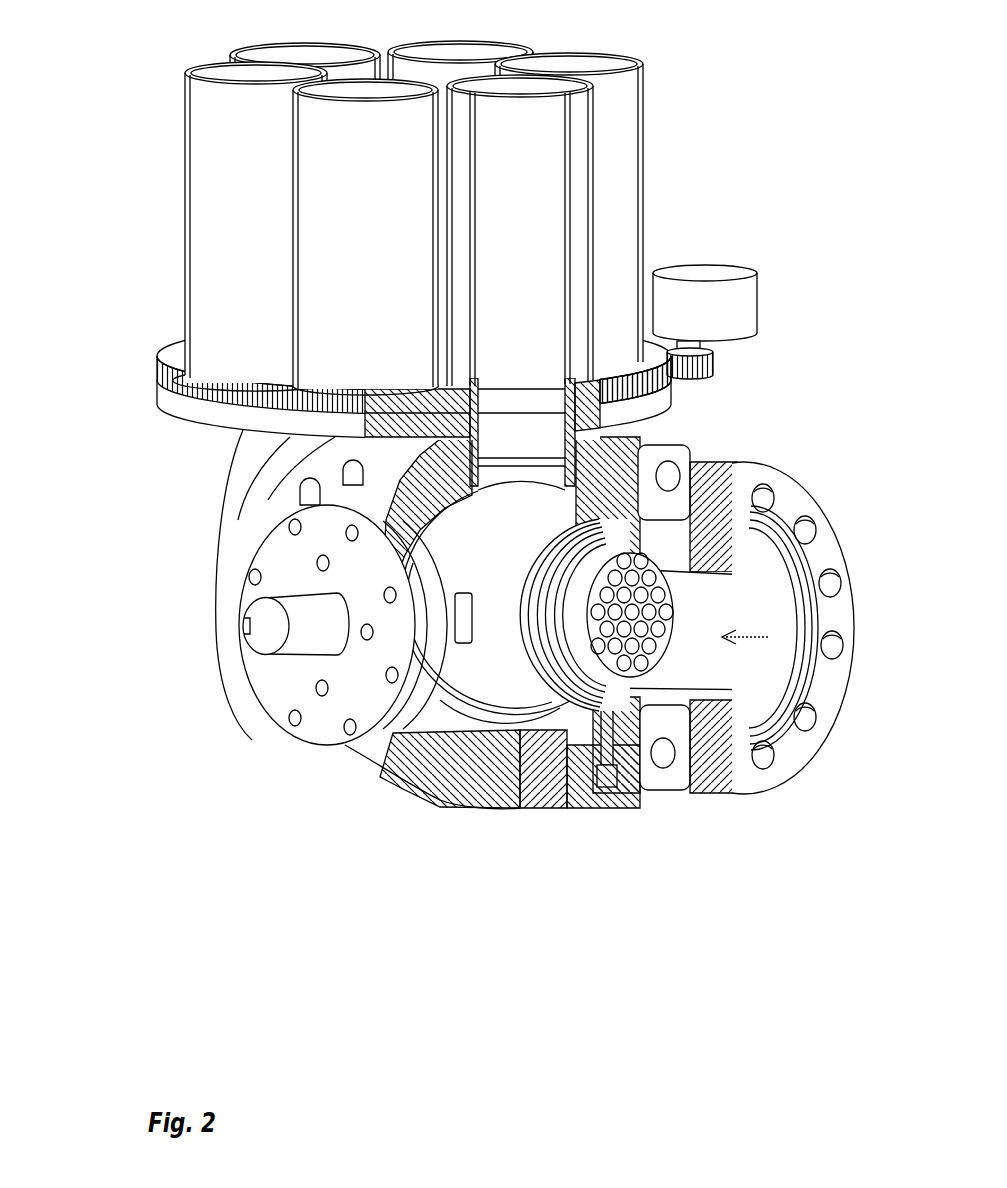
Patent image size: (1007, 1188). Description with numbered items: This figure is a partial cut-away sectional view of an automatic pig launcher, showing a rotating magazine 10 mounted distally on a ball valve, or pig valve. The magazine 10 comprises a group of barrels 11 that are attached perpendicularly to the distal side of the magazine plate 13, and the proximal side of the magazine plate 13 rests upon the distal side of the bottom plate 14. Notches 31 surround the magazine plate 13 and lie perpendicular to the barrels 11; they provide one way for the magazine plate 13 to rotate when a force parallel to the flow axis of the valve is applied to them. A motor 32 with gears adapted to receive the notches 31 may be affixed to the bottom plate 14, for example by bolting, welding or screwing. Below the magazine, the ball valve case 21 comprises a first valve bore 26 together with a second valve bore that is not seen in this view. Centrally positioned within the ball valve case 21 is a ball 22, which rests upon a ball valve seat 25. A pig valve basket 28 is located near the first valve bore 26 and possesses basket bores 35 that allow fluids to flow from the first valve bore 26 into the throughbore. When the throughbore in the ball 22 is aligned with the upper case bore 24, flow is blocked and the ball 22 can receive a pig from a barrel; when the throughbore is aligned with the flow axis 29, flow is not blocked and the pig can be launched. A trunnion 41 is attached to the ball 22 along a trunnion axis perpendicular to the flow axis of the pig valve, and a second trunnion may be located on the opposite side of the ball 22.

The magazine 10 is at (390, 228).
The barrels 11 is at (620, 116).
The magazine plate 13 is at (632, 372).
The bottom plate 14 is at (247, 422).
The ball valve case 21 is at (413, 797).
The ball 22 is at (508, 687).
The upper case bore 24 is at (520, 422).
The ball valve seat 25 is at (565, 725).
The first valve bore 26 is at (688, 637).
The pig valve basket 28 is at (598, 652).
The flow axis 29 is at (768, 645).
The notches 31 is at (228, 397).
The motor 32 is at (730, 308).
The basket bores 35 is at (630, 645).
The trunnion 41 is at (268, 645).